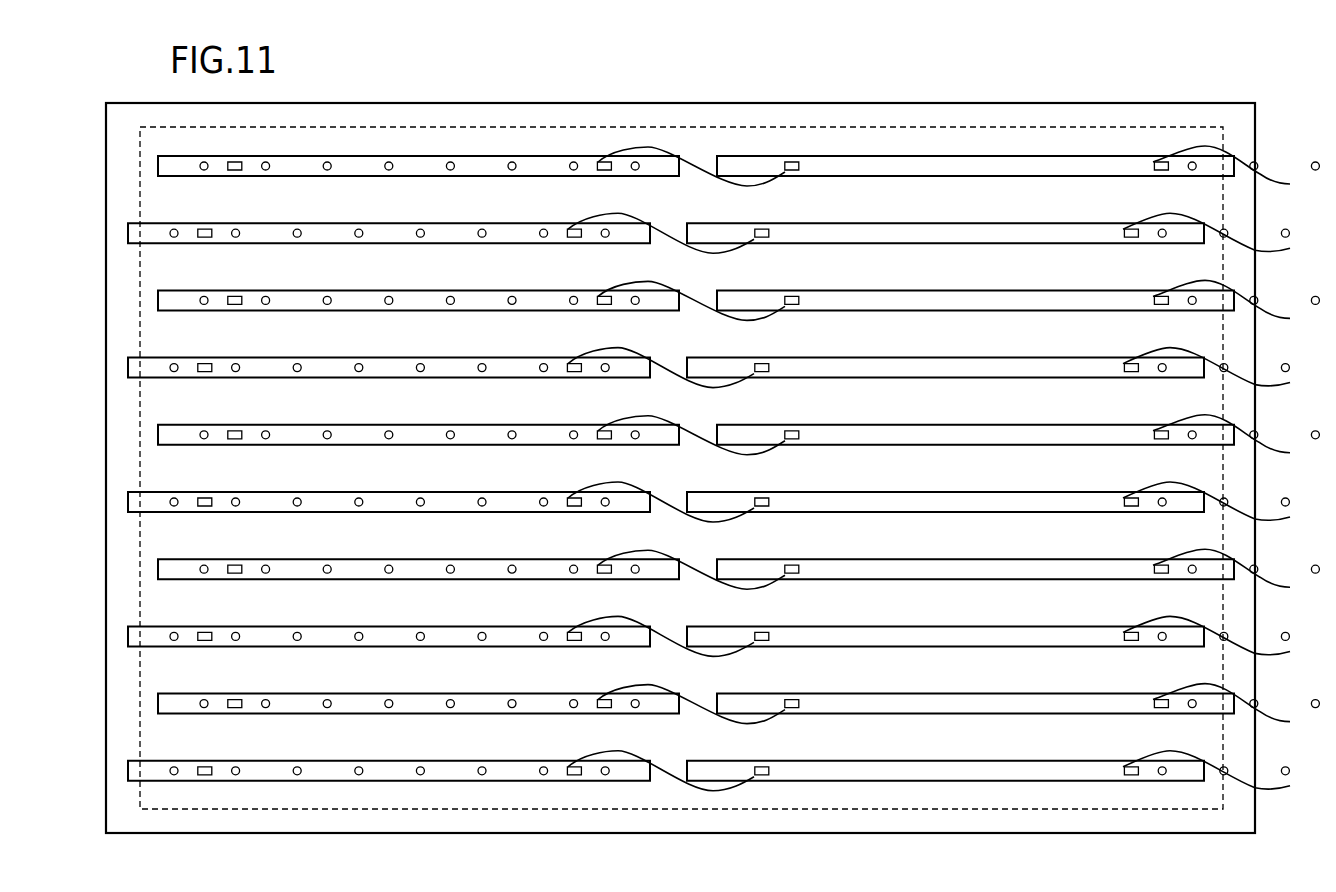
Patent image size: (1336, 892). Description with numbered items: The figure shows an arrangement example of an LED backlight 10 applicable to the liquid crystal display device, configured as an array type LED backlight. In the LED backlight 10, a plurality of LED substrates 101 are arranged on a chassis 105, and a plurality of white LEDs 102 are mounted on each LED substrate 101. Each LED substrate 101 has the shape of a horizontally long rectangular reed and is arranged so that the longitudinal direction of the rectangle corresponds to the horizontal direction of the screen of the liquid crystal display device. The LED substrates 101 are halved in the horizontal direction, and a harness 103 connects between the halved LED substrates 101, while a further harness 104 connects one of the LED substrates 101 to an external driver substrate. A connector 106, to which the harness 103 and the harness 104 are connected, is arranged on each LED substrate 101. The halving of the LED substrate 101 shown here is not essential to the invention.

The LED backlight 10 is at (1224, 97).
The LED substrate 101 is at (419, 166).
The white LED 102 is at (1007, 161).
The harness 103 is at (703, 168).
The harness 104 is at (1267, 179).
The chassis 105 is at (1257, 221).
The connector 106 is at (600, 162).